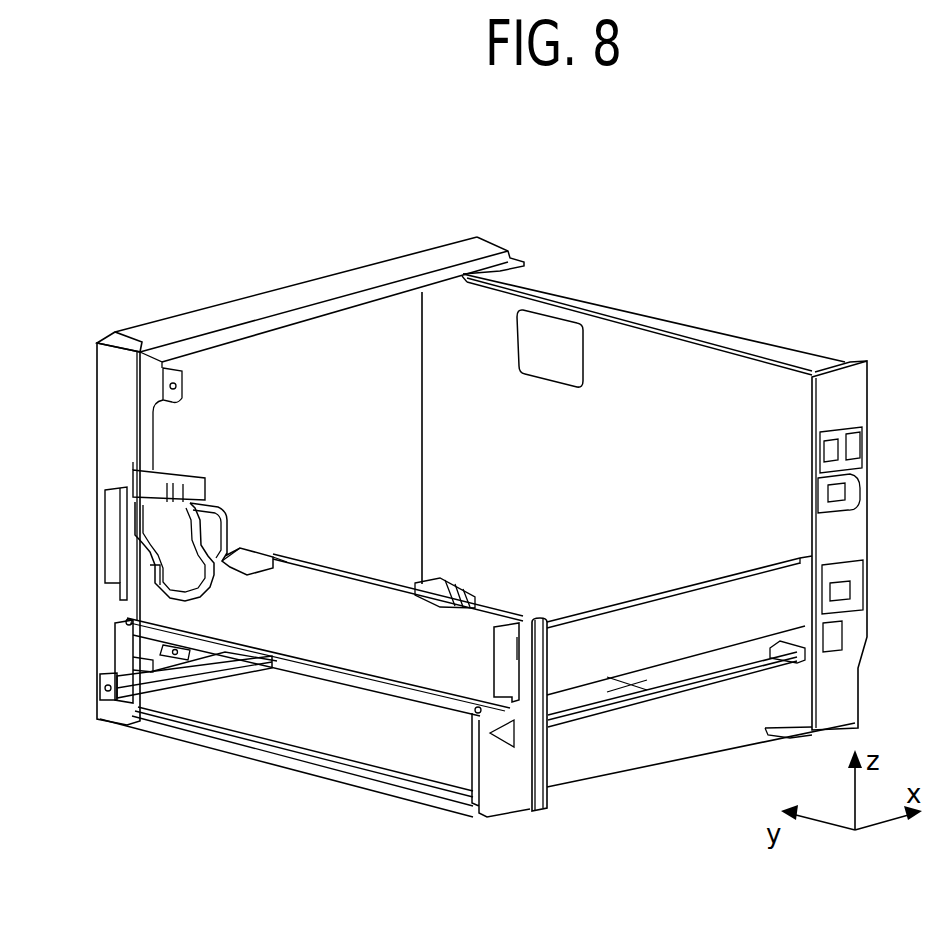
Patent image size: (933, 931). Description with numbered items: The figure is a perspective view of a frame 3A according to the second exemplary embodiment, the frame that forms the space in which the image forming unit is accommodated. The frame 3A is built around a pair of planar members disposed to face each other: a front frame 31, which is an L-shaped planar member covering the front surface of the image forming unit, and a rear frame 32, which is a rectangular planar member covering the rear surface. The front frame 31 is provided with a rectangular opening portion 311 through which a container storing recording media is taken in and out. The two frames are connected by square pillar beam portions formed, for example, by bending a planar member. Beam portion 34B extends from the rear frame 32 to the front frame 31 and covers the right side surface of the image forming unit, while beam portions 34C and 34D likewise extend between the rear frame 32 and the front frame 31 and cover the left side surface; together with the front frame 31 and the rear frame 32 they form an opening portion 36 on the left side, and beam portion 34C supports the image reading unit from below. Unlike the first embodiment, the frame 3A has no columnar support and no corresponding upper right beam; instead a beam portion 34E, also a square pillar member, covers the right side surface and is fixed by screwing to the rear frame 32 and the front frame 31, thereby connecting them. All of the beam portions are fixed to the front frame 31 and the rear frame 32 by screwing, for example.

The frame 3A is at (150, 278).
The front frame 31 is at (98, 442).
The opening portion 311 is at (302, 711).
The rear frame 32 is at (667, 352).
The beam portion 34B is at (633, 734).
The beam portion 34C is at (347, 279).
The beam portion 34D is at (192, 690).
The beam portion 34E is at (725, 623).
The opening portion 36 is at (276, 378).